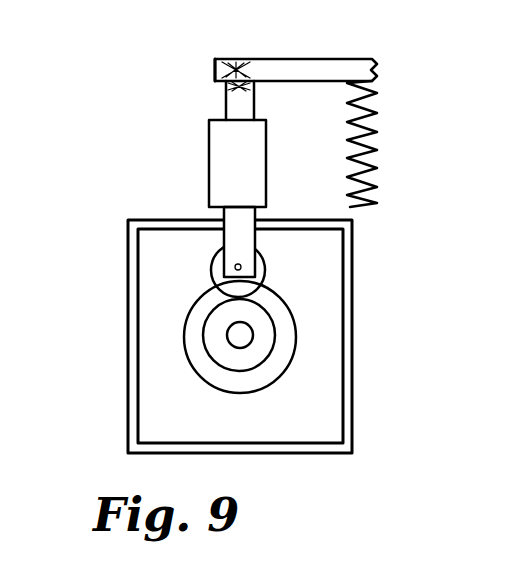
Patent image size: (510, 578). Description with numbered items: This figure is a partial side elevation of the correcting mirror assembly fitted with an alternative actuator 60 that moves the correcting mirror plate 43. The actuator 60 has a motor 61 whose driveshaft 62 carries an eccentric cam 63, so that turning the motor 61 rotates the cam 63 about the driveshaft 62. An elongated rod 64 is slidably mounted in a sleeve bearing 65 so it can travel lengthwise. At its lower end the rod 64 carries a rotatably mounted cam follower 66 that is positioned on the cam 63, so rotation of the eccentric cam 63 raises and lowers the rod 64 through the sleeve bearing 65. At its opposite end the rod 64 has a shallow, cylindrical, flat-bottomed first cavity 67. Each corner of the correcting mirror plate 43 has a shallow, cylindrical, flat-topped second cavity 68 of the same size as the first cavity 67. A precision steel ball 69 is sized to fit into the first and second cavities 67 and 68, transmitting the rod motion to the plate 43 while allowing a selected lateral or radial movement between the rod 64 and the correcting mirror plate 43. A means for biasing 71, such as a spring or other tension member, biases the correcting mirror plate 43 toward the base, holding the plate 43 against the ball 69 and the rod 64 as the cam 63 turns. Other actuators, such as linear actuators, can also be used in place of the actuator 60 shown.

The alternative actuator 60 is at (118, 91).
The motor 61 is at (145, 260).
The driveshaft 62 is at (240, 340).
The eccentric cam 63 is at (215, 322).
The elongated rod 64 is at (232, 107).
The sleeve bearing 65 is at (237, 155).
The cam follower 66 is at (265, 272).
The first cavity 67 is at (245, 85).
The second cavity 68 is at (248, 66).
The precision steel ball 69 is at (215, 68).
The means for biasing 71 is at (345, 130).
The correcting mirror plate 43 is at (338, 64).